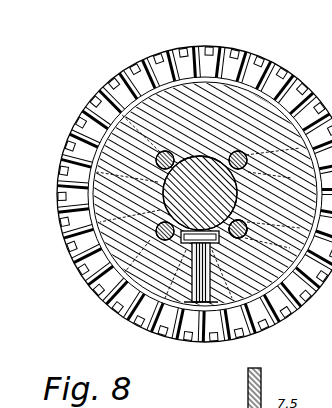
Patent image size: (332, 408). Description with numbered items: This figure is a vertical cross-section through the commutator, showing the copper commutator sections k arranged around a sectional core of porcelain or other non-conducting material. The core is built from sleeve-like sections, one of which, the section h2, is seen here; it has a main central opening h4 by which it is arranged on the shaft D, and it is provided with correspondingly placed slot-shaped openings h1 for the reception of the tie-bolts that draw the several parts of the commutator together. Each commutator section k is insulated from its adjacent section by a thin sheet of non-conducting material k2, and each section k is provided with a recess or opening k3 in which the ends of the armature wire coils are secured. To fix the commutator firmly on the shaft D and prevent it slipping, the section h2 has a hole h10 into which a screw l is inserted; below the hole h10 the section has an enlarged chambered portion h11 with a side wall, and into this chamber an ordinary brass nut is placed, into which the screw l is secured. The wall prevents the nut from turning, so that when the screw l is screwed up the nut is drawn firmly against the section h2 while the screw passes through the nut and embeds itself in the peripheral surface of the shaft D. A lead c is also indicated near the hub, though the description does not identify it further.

The commutator section k is at (58, 226).
The non-conducting material k2 is at (110, 299).
The recess or opening k3 is at (283, 63).
The main central opening h4 is at (165, 194).
The shaft D is at (200, 193).
The upper roller c is at (220, 152).
The opening h1 is at (241, 216).
The enlarged chambered portion h11 is at (244, 240).
The hole h10 is at (236, 240).
The sleeve-like section h2 is at (181, 251).
The screw l is at (191, 304).